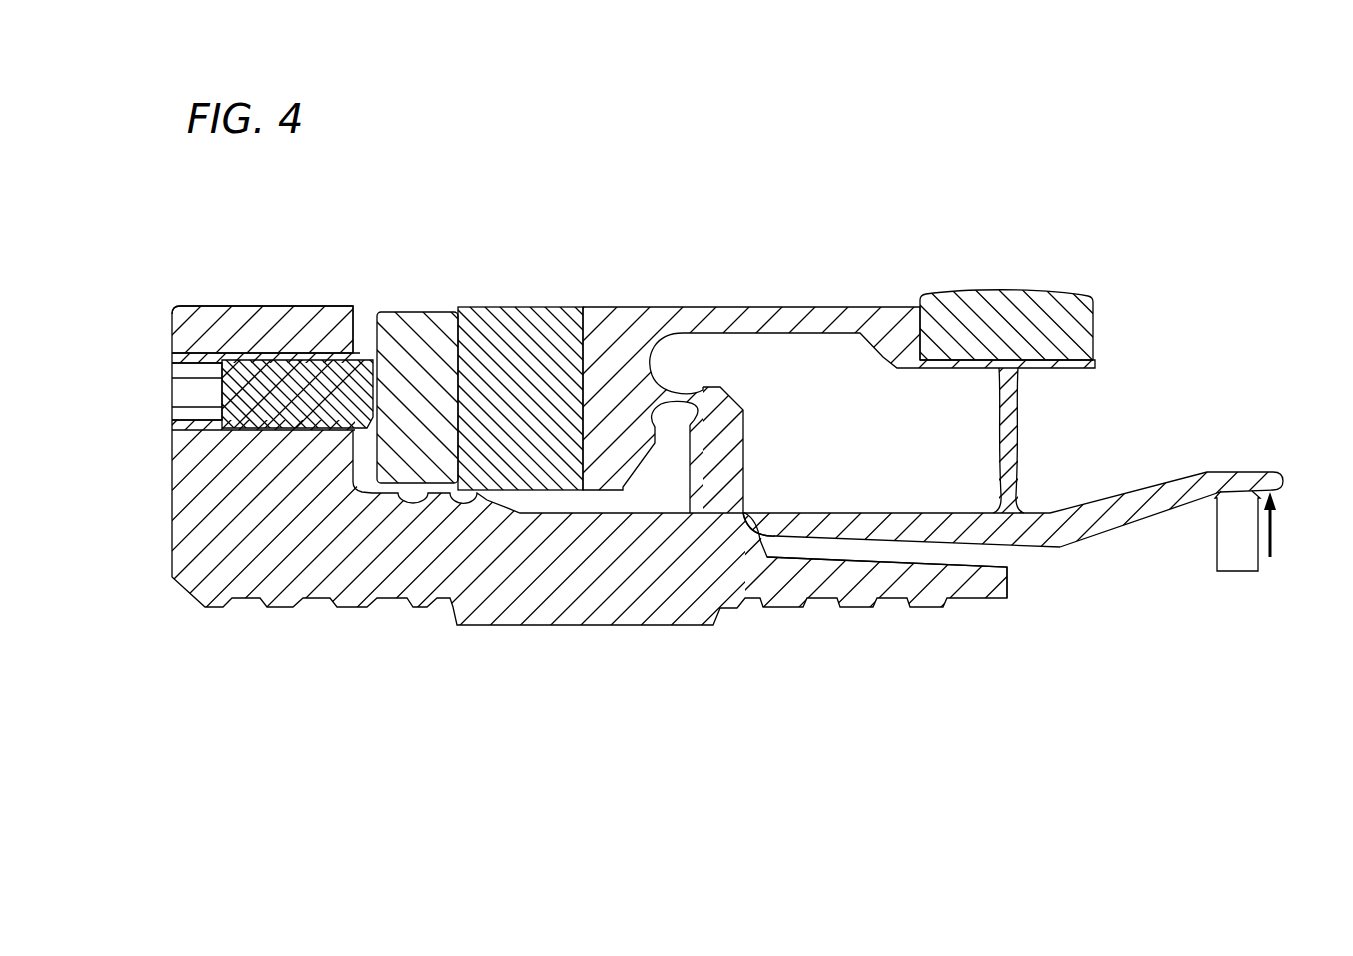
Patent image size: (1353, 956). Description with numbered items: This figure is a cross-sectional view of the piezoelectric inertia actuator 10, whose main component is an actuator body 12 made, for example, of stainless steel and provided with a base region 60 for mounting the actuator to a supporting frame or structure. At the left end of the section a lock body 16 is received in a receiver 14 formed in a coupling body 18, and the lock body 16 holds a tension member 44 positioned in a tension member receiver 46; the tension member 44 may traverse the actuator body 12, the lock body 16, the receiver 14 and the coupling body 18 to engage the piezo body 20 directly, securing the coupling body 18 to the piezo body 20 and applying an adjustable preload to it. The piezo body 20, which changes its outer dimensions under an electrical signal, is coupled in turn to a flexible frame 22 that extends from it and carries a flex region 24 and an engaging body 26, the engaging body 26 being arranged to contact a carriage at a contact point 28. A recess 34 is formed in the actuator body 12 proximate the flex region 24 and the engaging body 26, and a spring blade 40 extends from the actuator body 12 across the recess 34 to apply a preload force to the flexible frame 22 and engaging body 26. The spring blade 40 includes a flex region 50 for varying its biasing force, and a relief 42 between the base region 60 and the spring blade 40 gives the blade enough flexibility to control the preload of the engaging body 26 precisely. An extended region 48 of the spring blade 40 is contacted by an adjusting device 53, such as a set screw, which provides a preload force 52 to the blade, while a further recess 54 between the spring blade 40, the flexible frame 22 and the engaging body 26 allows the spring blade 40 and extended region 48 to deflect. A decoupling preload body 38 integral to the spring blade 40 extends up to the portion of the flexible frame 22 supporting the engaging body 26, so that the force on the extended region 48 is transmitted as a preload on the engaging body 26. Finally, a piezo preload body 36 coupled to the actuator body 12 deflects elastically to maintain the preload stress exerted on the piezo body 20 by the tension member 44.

The piezoelectric inertia actuator 10 is at (1158, 244).
The actuator body 12 is at (202, 510).
The receiver 14 is at (364, 298).
The lock body 16 is at (225, 306).
The coupling body 18 is at (420, 312).
The piezo body 20 is at (520, 307).
The flexible frame 22 is at (1095, 172).
The flex region 24 is at (800, 307).
The engaging body 26 is at (1057, 347).
The contact point 28 is at (1020, 292).
The recess 34 is at (861, 425).
The piezo preload body 36 is at (707, 387).
The decoupling preload body 38 is at (998, 437).
The spring blade 40 is at (1277, 720).
The relief 42 is at (1010, 556).
The tension member 44 is at (185, 388).
The tension member receiver 46 is at (288, 360).
The extended region 48 is at (1261, 471).
The flex region 50 is at (770, 540).
The preload force 52 is at (1272, 530).
The adjusting device 53 is at (1217, 533).
The recess 54 is at (1184, 436).
The base region 60 is at (1010, 675).